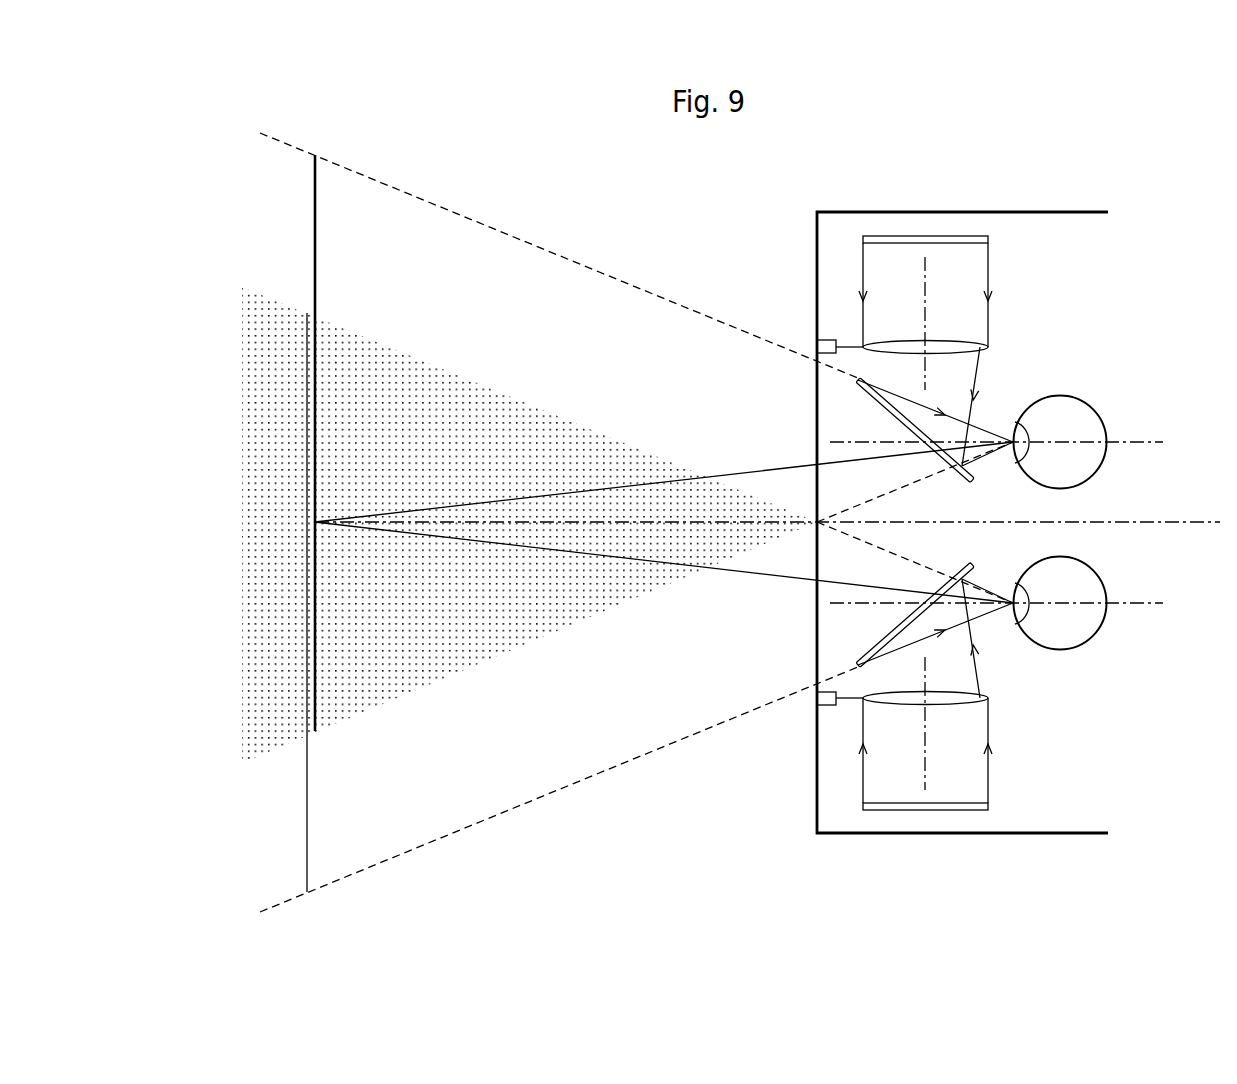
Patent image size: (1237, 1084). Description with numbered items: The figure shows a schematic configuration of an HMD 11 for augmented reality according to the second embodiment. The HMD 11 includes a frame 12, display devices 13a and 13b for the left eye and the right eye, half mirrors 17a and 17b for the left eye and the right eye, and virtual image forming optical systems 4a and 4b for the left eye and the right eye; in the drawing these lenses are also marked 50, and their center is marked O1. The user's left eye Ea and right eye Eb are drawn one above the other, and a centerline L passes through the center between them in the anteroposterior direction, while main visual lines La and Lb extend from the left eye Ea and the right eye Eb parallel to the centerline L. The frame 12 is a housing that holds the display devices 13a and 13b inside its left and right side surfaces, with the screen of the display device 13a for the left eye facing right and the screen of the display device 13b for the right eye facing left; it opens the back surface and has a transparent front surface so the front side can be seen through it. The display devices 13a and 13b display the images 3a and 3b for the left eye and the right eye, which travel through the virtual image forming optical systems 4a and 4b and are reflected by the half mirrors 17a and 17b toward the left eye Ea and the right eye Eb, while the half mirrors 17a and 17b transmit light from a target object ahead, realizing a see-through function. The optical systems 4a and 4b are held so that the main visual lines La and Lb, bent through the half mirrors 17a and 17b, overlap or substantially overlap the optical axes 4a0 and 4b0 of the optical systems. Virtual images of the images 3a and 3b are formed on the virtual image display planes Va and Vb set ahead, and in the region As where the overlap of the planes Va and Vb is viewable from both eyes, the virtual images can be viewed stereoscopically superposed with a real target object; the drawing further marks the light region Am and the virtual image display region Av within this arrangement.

The HMD for AR 11 is at (896, 481).
The frame 12 is at (1091, 211).
The display device for the left eye 13a is at (955, 811).
The display device for the right eye 13b is at (955, 235).
The image for the left eye 3a is at (880, 801).
The image for the right eye 3b is at (880, 246).
The virtual image forming optical system for the left eye 4a is at (983, 700).
The virtual image forming optical system for the right eye 4b is at (983, 346).
The optical system lens 50 is at (954, 522).
The optical axis of the virtual image forming optical system for the left eye 4a0 is at (925, 778).
The optical axis of the virtual image forming optical system for the right eye 4b0 is at (925, 268).
The lens center O1 is at (928, 354).
The half mirror for the left eye 17a is at (977, 565).
The half mirror for the right eye 17b is at (977, 483).
The left eye Ea is at (1092, 637).
The right eye Eb is at (1092, 408).
The main visual line of the left eye La is at (1133, 605).
The main visual line of the right eye Lb is at (1133, 440).
The centerline L is at (1198, 521).
The image light region Am is at (501, 262).
The region viewable from both eyes As is at (345, 440).
The virtual image display region Av is at (418, 589).
The virtual image display plane for the left eye Va is at (306, 822).
The virtual image display plane for the right eye Vb is at (313, 230).